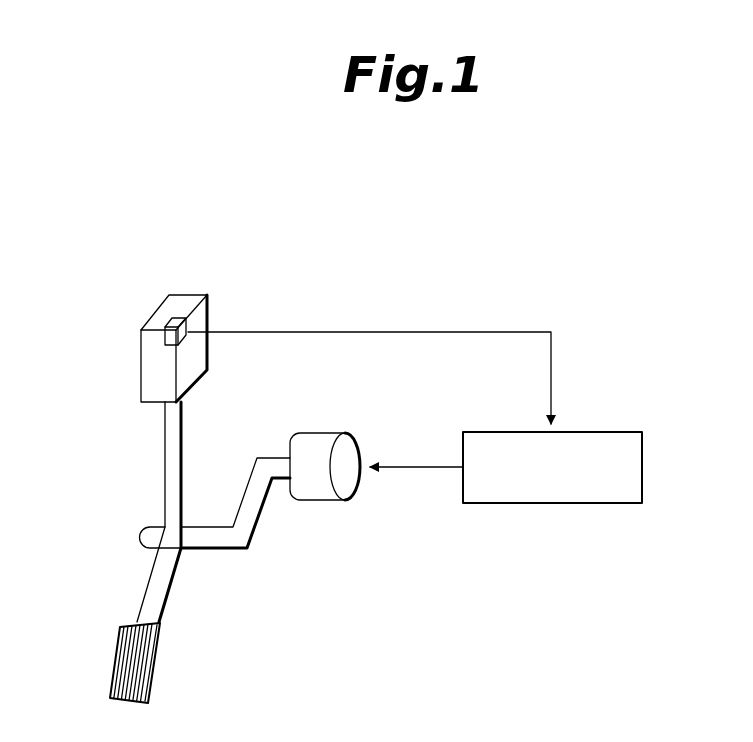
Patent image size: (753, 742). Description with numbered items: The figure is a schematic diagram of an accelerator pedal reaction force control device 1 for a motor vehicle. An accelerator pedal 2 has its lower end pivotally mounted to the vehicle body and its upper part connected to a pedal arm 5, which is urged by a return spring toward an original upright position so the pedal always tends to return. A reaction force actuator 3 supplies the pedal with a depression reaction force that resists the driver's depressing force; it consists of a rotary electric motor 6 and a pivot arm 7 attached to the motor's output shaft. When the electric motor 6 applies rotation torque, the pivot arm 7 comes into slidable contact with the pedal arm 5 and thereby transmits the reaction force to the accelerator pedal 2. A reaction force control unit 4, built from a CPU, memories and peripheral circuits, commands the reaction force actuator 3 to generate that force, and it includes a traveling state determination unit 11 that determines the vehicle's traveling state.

The accelerator pedal reaction force control device 1 is at (460, 240).
The accelerator pedal 2 is at (125, 658).
The reaction force actuator 3 is at (340, 526).
The reaction force control unit 4 is at (603, 432).
The pedal arm 5 is at (170, 458).
The rotary electric motor 6 is at (316, 443).
The pivot arm 7 is at (237, 546).
The traveling state determination unit 11 is at (199, 322).